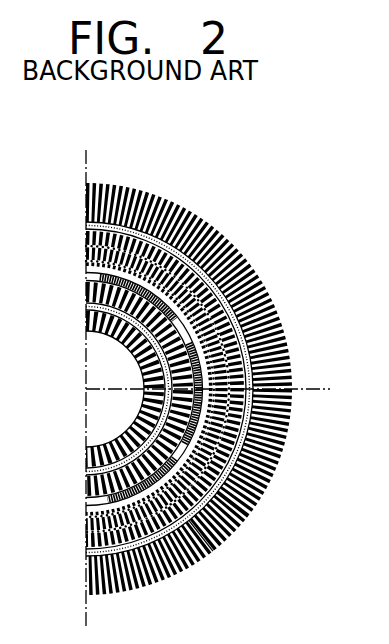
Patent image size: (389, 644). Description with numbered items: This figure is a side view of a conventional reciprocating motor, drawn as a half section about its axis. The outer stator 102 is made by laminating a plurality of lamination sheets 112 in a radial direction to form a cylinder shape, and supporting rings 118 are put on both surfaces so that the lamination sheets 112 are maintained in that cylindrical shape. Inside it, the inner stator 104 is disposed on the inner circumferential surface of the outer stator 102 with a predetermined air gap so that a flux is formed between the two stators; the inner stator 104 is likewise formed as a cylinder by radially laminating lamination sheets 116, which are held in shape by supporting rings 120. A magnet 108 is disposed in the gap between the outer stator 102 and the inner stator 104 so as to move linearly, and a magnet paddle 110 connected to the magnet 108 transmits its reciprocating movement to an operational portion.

The outer stator 102 is at (193, 388).
The inner stator 104 is at (175, 320).
The magnet 108 is at (215, 410).
The magnet paddle 110 is at (240, 460).
The lamination sheets 112 is at (247, 517).
The lamination sheets 116 is at (93, 490).
The supporting rings 118 is at (212, 550).
The supporting rings 120 is at (86, 305).